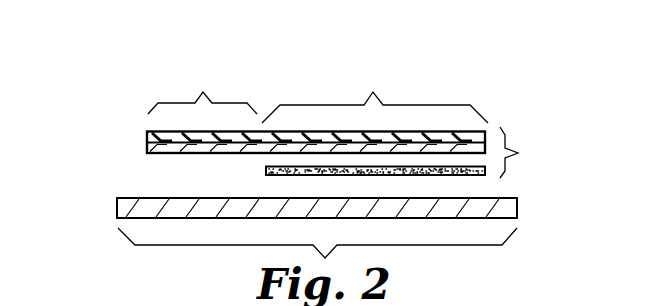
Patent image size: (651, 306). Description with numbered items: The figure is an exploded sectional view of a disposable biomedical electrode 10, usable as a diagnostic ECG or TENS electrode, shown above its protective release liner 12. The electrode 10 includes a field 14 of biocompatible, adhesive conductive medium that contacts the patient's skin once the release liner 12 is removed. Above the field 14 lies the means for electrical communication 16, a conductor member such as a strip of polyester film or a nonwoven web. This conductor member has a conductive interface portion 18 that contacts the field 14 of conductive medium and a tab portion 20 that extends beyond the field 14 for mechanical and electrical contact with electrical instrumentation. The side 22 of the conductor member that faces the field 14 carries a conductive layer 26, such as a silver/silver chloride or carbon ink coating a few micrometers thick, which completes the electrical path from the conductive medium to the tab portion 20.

The electrode 10 is at (335, 192).
The release liner 12 is at (122, 207).
The field of conductive medium 14 is at (267, 174).
The means for electrical communication 16 is at (150, 137).
The conductive interface portion 18 is at (375, 93).
The tab portion 20 is at (202, 88).
The side 22 is at (147, 147).
The conductive layer 26 is at (185, 148).